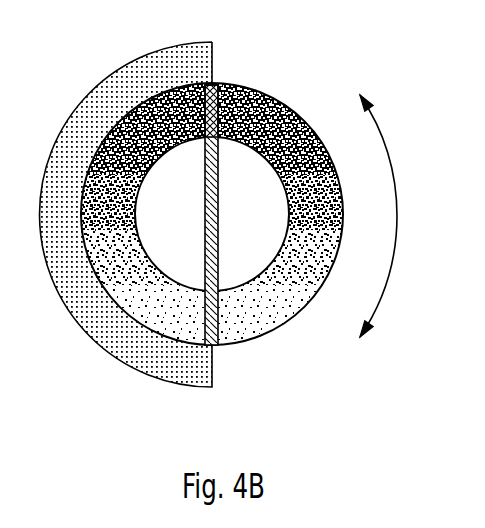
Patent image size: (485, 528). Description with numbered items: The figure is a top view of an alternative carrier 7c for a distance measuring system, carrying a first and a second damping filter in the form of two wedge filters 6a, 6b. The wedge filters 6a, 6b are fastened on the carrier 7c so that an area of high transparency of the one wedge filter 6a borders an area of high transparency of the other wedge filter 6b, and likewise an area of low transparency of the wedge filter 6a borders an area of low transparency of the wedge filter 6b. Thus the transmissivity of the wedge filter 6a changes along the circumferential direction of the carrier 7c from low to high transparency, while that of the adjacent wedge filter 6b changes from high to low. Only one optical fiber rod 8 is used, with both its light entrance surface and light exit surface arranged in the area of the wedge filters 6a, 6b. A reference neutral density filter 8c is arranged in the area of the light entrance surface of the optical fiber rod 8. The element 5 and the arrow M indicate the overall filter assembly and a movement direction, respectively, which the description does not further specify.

The nut body / component 5 is at (113, 344).
The wedge filter 6a is at (340, 213).
The wedge filter 6b is at (120, 118).
The carrier 7c is at (262, 193).
The optical fiber rod 8 is at (212, 345).
The reference neutral density filter 8c is at (217, 84).
The movement direction arrow M is at (393, 216).